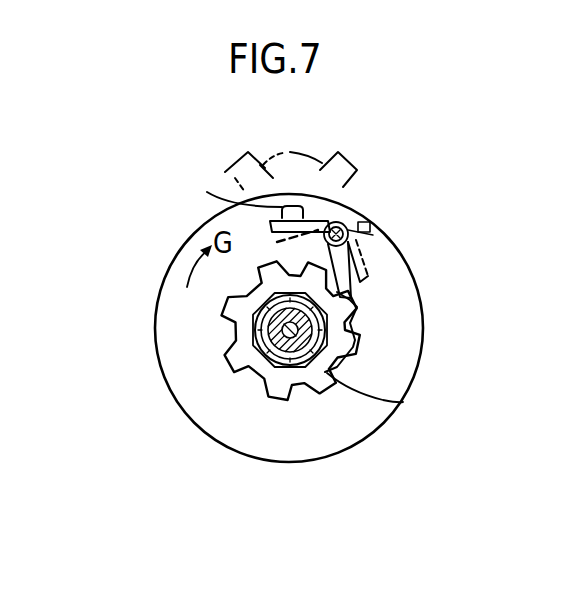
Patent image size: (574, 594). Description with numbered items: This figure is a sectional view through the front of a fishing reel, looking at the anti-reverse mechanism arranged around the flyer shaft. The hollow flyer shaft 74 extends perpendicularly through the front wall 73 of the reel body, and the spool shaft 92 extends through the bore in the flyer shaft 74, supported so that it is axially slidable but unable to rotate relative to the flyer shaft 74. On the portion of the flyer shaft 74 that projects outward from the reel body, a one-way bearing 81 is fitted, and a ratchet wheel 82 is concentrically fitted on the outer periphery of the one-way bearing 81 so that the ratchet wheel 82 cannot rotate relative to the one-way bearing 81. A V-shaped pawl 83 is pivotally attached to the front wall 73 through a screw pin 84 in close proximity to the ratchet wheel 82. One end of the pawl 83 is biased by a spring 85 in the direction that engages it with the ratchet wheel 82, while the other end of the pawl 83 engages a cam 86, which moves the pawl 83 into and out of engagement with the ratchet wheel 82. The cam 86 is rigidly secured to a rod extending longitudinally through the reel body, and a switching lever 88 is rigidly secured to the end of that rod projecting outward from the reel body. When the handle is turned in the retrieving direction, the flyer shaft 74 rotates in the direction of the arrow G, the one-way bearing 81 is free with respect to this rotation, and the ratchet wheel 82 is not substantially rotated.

The front wall 73 is at (407, 347).
The flyer shaft 74 is at (403, 402).
The one-way bearing 81 is at (262, 345).
The ratchet wheel 82 is at (353, 323).
The V-shaped pawl 83 is at (357, 283).
The screw pin 84 is at (338, 220).
The spring 85 is at (353, 245).
The cam 86 is at (207, 192).
The switching lever 88 is at (283, 163).
The spool shaft 92 is at (262, 360).